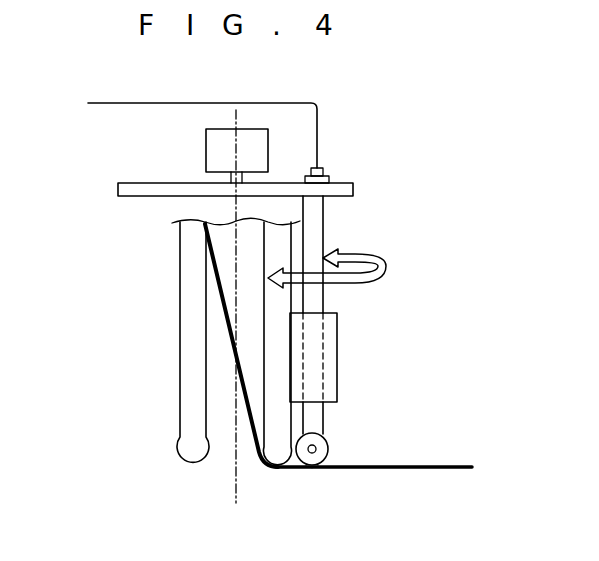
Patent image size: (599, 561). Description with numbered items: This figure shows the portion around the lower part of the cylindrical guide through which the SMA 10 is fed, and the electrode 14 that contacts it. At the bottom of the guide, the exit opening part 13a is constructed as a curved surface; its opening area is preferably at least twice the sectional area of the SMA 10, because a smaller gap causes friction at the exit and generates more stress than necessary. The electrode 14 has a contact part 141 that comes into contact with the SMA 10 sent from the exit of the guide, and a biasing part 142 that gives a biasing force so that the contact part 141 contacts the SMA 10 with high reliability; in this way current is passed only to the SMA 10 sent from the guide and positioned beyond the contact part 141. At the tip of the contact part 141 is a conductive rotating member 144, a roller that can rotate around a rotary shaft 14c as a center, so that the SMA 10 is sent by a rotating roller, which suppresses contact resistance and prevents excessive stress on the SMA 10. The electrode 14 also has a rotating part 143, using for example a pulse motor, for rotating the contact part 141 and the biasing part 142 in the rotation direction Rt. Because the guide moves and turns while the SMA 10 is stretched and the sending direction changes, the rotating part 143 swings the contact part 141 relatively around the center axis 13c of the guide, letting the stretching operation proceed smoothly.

The SMA 10 is at (407, 470).
The exit opening part 13a is at (180, 328).
The center axis 13c is at (233, 494).
The electrode 14 is at (287, 334).
The contact part 141 is at (332, 418).
The biasing part 142 is at (340, 333).
The rotating part 143 is at (206, 153).
The rotating member 144 is at (329, 449).
The rotary shaft 14c is at (311, 470).
The rotation direction Rt is at (404, 239).